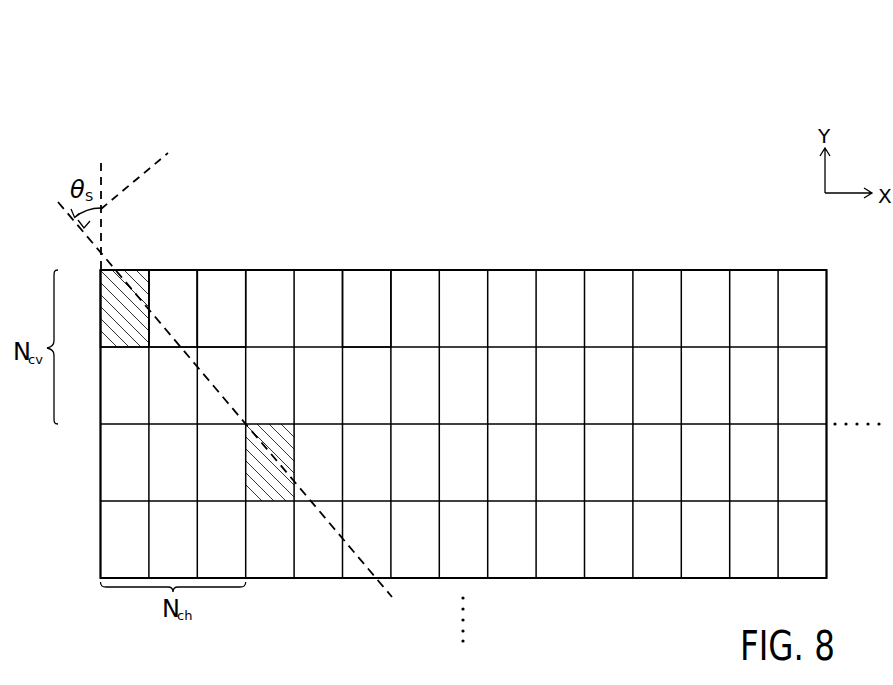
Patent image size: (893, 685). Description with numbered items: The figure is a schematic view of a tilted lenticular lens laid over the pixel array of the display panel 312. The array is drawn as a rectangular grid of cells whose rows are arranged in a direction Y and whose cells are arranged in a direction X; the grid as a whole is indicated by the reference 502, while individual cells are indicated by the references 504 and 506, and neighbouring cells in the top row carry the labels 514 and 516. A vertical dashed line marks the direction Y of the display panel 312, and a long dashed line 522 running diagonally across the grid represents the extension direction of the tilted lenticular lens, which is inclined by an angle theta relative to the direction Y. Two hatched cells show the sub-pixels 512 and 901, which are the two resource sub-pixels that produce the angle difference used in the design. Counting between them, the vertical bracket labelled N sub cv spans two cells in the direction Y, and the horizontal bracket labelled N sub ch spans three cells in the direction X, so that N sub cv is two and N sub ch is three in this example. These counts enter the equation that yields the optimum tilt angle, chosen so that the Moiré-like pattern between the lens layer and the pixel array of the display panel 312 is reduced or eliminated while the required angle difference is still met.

The display panel 312 is at (63, 156).
The pixel array / display panel 502 is at (842, 287).
The pixel 504 is at (100, 300).
The pixel 506 is at (360, 270).
The sub-pixel 512 is at (130, 275).
The adjacent pixel 514 is at (192, 320).
The adjacent pixel 516 is at (241, 320).
The scan line 522 is at (90, 238).
The sub-pixel 901 is at (272, 426).